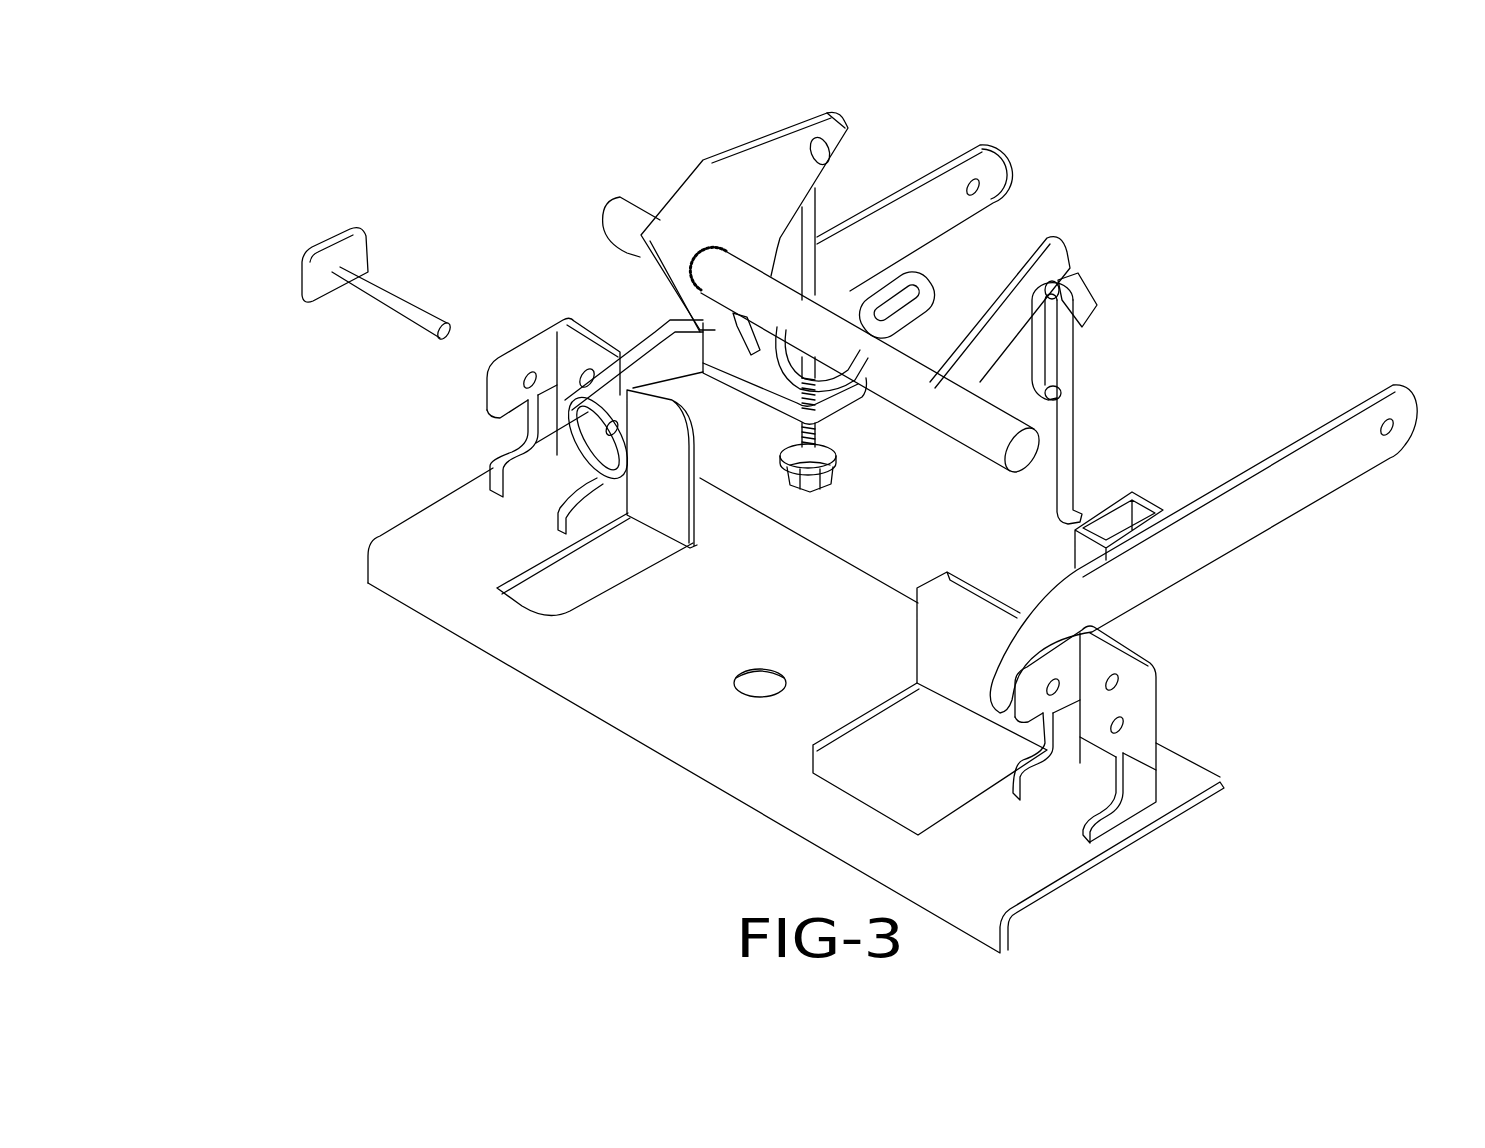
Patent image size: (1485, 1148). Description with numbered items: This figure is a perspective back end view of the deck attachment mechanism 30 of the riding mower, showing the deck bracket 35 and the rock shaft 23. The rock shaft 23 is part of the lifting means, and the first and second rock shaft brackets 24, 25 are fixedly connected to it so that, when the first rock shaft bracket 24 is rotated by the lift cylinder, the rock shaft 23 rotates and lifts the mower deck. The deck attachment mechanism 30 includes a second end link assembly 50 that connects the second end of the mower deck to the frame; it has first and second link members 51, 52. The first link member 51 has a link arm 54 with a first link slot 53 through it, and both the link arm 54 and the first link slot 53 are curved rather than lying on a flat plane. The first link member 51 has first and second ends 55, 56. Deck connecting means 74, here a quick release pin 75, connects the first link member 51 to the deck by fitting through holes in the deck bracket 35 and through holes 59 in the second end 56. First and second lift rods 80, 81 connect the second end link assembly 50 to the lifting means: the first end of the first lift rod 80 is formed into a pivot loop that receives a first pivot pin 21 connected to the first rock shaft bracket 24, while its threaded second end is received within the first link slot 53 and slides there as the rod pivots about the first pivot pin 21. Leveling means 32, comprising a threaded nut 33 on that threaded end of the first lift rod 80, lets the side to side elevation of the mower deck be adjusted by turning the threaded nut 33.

The first pivot pin 21 is at (845, 126).
The rock shaft 23 is at (805, 323).
The first rock shaft bracket 24 is at (737, 163).
The second rock shaft bracket 25 is at (1050, 250).
The deck attachment mechanism 30 is at (1280, 232).
The leveling means 32 is at (853, 457).
The threaded nut 33 is at (797, 482).
The deck bracket 35 is at (580, 687).
The second end link assembly 50 is at (568, 195).
The first link member 51 is at (940, 185).
The second link member 52 is at (1243, 527).
The first link slot 53 is at (903, 291).
The link arm 54 is at (835, 405).
The first end 55 is at (988, 150).
The second end 56 is at (587, 453).
The holes 59 is at (613, 425).
The deck connecting means 74 is at (1030, 168).
The quick release pin 75 is at (397, 317).
The first lift rod 80 is at (813, 213).
The second lift rod 81 is at (1067, 410).